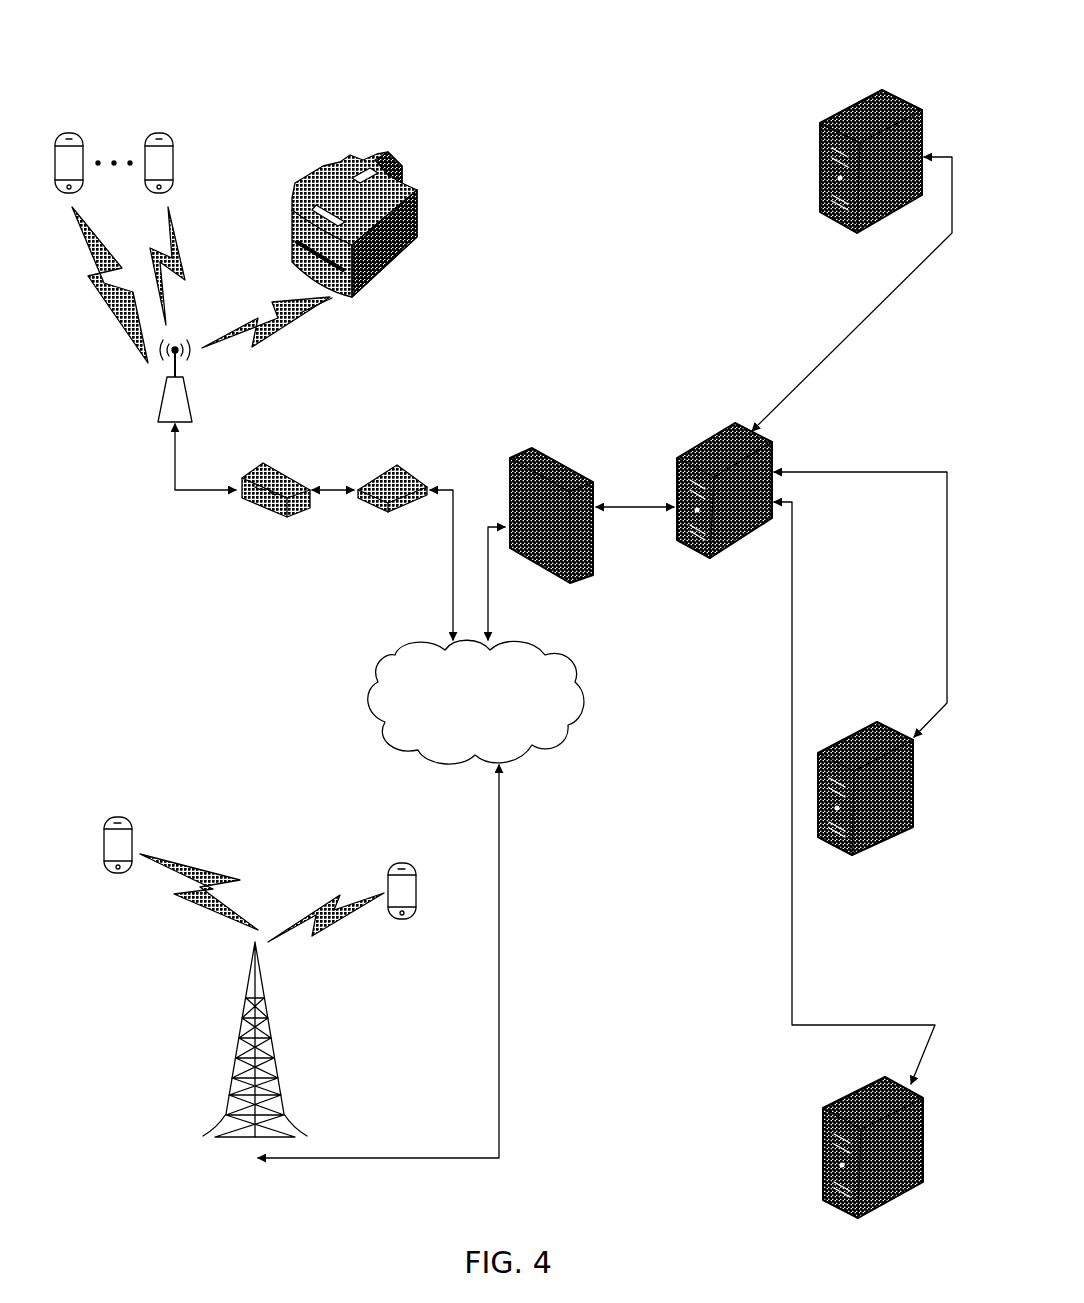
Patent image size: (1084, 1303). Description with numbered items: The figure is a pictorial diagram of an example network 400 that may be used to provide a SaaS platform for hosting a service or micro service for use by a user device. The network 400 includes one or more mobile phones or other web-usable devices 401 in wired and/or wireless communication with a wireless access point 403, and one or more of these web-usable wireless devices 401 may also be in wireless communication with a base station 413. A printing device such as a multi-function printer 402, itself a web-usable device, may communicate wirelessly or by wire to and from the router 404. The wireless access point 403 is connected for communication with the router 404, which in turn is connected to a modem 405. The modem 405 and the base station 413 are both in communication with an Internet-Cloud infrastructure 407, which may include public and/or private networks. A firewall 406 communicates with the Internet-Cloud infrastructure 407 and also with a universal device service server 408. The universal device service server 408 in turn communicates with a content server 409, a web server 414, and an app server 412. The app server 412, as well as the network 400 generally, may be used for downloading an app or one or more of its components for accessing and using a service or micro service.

The network 400 is at (190, 46).
The web-usable devices 401 is at (402, 860).
The multi-function printer 402 is at (426, 186).
The wireless access point 403 is at (188, 380).
The router 404 is at (258, 510).
The modem 405 is at (388, 514).
The firewall 406 is at (549, 455).
The Internet-Cloud infrastructure 407 is at (476, 702).
The universal device service server 408 is at (731, 422).
The content server 409 is at (819, 134).
The app server 412 is at (821, 1106).
The base station 413 is at (285, 1062).
The web server 414 is at (866, 718).